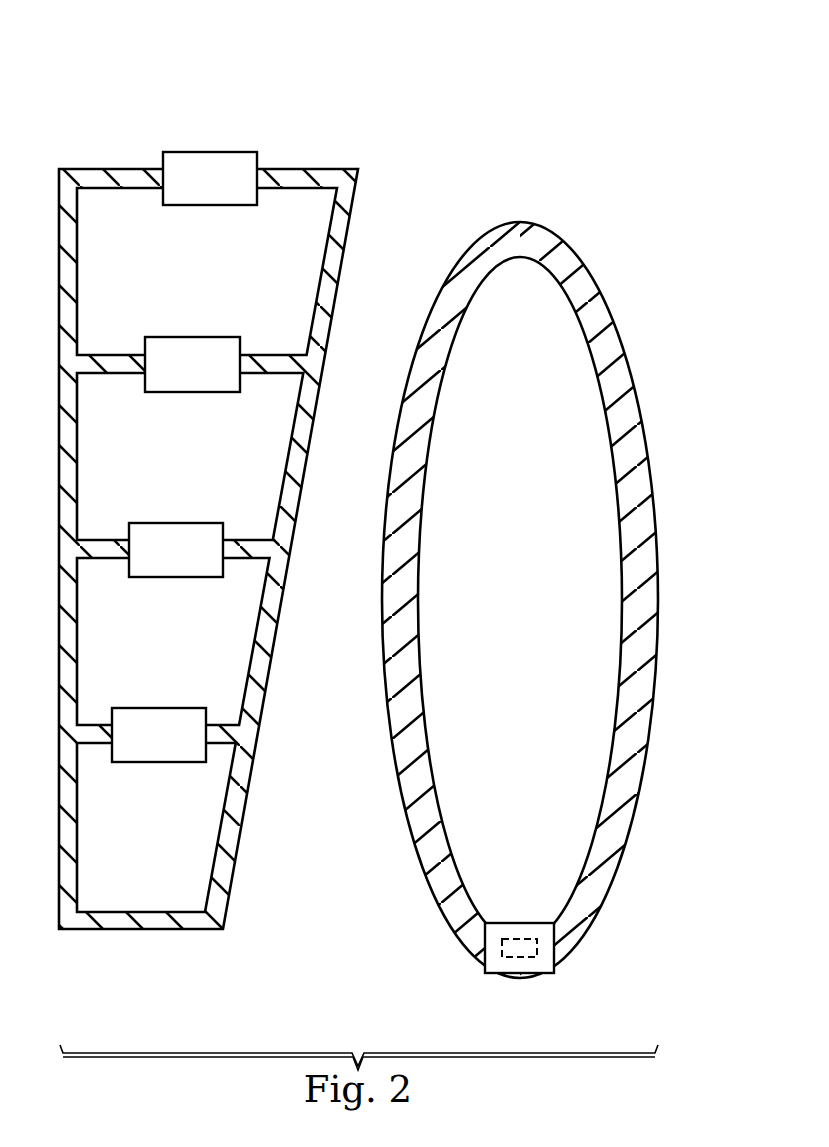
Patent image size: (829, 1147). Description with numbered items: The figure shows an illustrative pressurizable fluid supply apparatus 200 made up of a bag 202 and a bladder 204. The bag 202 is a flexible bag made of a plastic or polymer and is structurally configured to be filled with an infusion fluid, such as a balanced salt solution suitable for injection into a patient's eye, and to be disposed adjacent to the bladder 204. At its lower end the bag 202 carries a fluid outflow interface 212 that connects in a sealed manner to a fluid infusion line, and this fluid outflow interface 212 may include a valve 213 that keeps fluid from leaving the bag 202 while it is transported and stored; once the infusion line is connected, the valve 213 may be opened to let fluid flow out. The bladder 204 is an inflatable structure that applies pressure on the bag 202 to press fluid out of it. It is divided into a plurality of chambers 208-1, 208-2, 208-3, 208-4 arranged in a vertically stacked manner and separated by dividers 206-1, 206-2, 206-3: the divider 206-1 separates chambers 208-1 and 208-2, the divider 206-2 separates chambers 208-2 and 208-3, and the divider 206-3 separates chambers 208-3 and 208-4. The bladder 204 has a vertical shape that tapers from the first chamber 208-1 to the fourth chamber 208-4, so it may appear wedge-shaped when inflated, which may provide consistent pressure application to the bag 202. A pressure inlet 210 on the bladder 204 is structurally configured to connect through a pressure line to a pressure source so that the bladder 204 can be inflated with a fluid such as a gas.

The pressurizable fluid supply apparatus 200 is at (476, 62).
The bag 202 is at (526, 216).
The bladder 204 is at (125, 166).
The divider 206-1 is at (158, 376).
The divider 206-2 is at (142, 562).
The divider 206-3 is at (124, 746).
The first chamber 208-1 is at (166, 282).
The second chamber 208-2 is at (149, 470).
The third chamber 208-3 is at (130, 654).
The fourth chamber 208-4 is at (116, 840).
The pressure inlet 210 is at (186, 192).
The fluid outflow interface 212 is at (522, 962).
The valve 213 is at (518, 937).